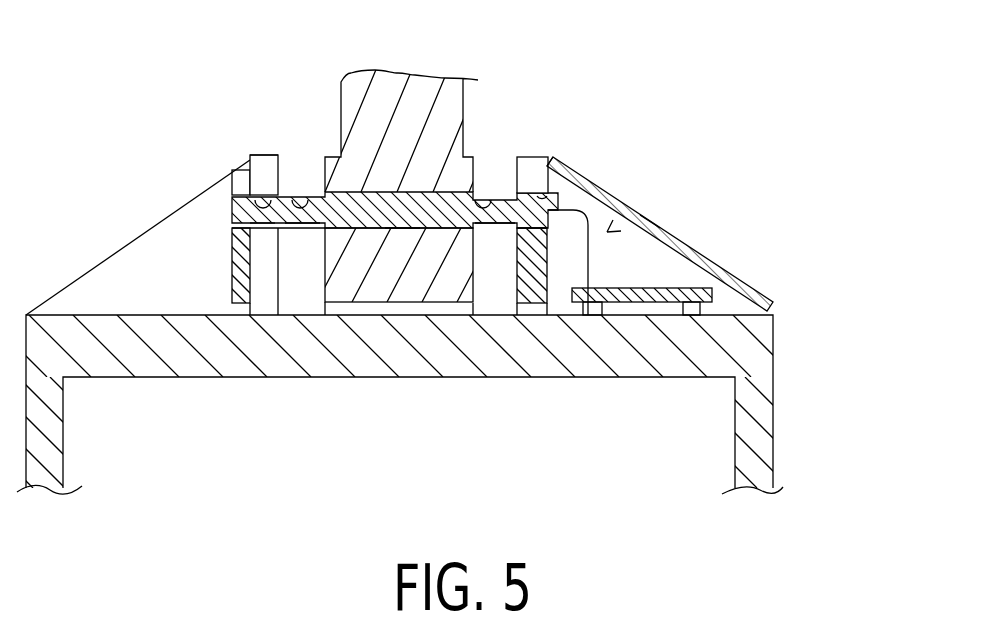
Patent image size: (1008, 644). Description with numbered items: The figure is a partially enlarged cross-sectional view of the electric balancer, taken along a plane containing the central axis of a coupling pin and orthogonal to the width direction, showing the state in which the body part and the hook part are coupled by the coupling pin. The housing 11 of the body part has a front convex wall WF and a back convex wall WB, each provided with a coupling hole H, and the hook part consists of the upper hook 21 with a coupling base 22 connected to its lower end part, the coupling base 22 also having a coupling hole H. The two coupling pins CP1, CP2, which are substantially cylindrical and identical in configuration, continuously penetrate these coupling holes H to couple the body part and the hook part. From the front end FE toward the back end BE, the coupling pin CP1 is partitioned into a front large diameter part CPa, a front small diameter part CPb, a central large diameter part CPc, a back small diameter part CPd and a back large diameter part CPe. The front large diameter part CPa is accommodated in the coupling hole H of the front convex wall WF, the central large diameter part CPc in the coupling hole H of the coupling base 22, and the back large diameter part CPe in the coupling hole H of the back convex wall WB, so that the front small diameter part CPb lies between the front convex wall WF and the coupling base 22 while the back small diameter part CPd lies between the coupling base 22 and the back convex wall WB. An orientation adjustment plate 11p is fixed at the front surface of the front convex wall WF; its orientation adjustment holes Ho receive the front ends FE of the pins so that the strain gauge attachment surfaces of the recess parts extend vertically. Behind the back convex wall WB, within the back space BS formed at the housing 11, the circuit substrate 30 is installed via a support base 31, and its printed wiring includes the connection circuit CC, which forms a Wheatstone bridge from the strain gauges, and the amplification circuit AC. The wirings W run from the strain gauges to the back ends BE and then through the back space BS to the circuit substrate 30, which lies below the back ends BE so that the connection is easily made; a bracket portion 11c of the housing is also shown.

The housing 11 is at (773, 438).
The orientation adjustment plate 11p is at (233, 275).
The bracket portion of base 11c is at (585, 210).
The upper hook 21 is at (438, 98).
The coupling base 22 is at (448, 278).
The circuit substrate 30 is at (727, 234).
The connection circuit CC is at (660, 234).
The amplification circuit AC is at (683, 288).
The support base 31 is at (697, 305).
The coupling pin CP1 is at (334, 135).
The coupling pin CP2 is at (240, 213).
The front large diameter part CPa is at (262, 224).
The front small diameter part CPb is at (300, 224).
The central large diameter part CPc is at (398, 203).
The back small diameter part CPd is at (500, 224).
The back large diameter part CPe is at (530, 228).
The front end FE is at (232, 200).
The front convex wall WF is at (263, 156).
The back convex wall WB is at (530, 157).
The coupling hole H is at (307, 200).
The orientation adjustment hole Ho is at (262, 212).
The back end BE is at (598, 192).
The back space BS is at (650, 222).
The wiring W is at (607, 232).